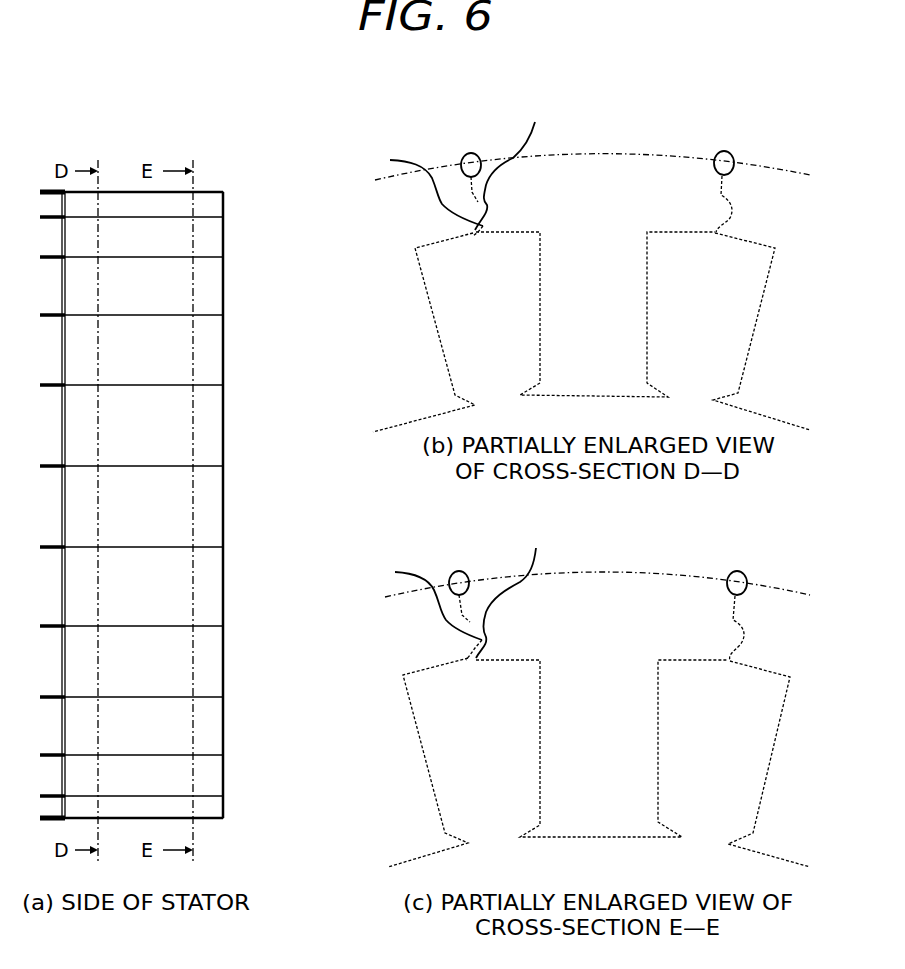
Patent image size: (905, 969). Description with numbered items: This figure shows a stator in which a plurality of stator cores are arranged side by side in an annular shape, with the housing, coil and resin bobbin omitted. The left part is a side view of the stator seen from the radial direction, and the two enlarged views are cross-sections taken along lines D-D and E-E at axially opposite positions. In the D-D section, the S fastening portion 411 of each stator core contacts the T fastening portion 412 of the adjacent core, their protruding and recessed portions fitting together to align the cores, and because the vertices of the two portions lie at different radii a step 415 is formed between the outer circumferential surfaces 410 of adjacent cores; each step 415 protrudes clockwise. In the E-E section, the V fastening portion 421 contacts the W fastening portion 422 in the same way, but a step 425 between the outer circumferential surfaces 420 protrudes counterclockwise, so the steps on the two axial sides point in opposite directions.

The outer circumferential surface 410 is at (632, 155).
The S fastening portion 411 is at (416, 190).
The T fastening portion 412 is at (515, 165).
The step 415 is at (462, 157).
The outer circumferential surface 420 is at (630, 573).
The V fastening portion 421 is at (418, 610).
The W fastening portion 422 is at (516, 590).
The step 425 is at (452, 572).